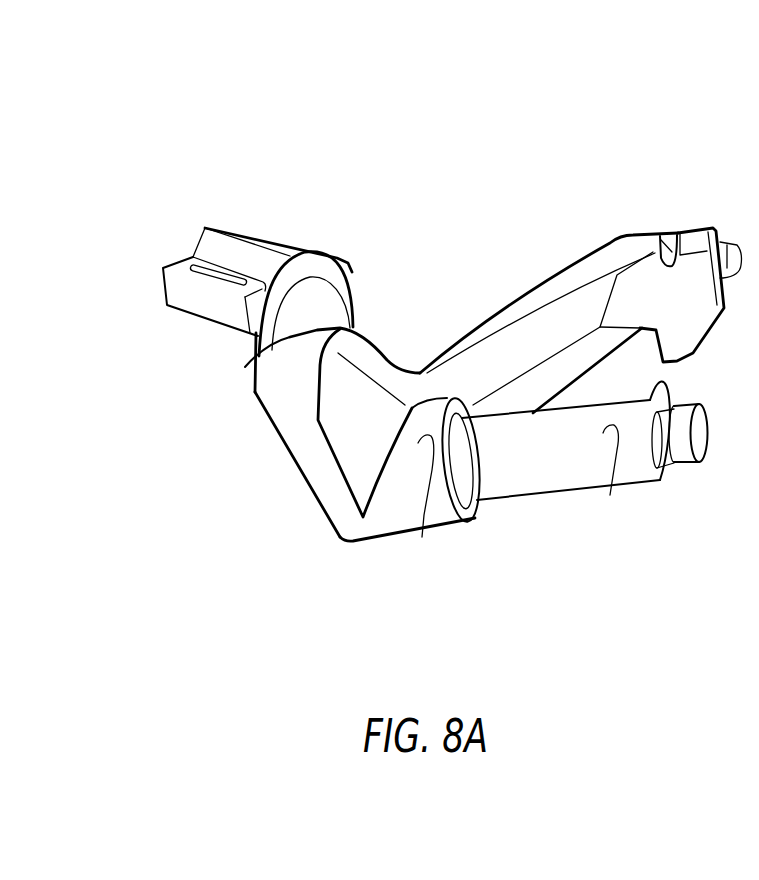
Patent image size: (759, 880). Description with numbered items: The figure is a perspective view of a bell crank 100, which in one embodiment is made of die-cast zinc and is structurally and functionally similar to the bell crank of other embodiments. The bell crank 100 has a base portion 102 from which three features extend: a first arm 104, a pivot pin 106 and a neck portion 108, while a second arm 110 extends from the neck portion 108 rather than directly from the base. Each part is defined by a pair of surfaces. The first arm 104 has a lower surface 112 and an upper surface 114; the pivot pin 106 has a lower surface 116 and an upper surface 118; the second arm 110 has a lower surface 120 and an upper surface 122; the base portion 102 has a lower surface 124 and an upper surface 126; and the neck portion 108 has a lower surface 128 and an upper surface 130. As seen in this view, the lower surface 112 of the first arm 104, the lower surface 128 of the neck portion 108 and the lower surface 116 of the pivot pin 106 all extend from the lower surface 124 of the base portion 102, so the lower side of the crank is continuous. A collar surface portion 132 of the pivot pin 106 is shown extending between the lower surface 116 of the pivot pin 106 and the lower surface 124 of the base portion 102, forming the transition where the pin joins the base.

The bell crank 100 is at (302, 78).
The base portion 102 is at (408, 320).
The first arm 104 is at (559, 228).
The pivot pin 106 is at (563, 522).
The neck portion 108 is at (217, 359).
The second arm 110 is at (171, 210).
The lower surface of the first arm 112 is at (577, 358).
The upper surface of the first arm 114 is at (512, 305).
The lower surface of the pivot pin 116 is at (610, 495).
The upper surface of the pivot pin 118 is at (673, 465).
The lower surface of the second arm 120 is at (272, 243).
The upper surface of the second arm 122 is at (230, 330).
The lower surface of the base portion 124 is at (318, 420).
The upper surface of the base portion 126 is at (304, 499).
The lower surface of the neck portion 128 is at (310, 315).
The upper surface of the neck portion 130 is at (245, 367).
The collar surface portion 132 is at (422, 537).